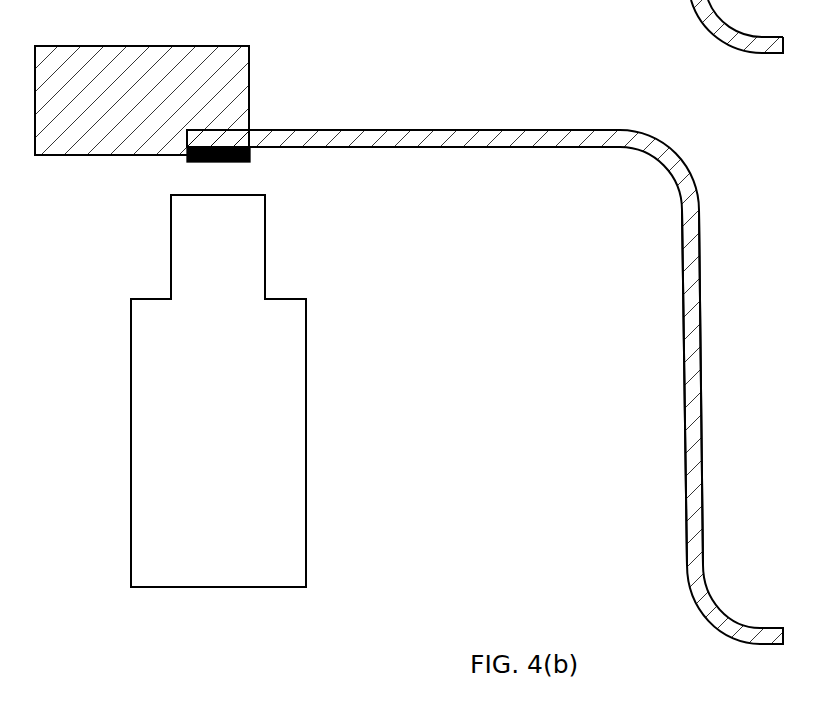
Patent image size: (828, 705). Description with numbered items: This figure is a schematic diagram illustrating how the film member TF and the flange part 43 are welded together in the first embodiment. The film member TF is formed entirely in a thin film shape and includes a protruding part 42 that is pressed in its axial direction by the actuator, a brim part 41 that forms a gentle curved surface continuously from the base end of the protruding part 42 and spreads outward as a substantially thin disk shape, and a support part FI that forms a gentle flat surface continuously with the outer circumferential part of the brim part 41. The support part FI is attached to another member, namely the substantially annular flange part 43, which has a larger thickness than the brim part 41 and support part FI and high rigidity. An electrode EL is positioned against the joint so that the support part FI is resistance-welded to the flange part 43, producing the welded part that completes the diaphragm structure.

The brim part 41 is at (426, 130).
The protruding part 42 is at (683, 411).
The flange part 43 is at (100, 156).
The support part FI is at (218, 130).
The film member TF is at (549, 94).
The electrode EL is at (306, 500).